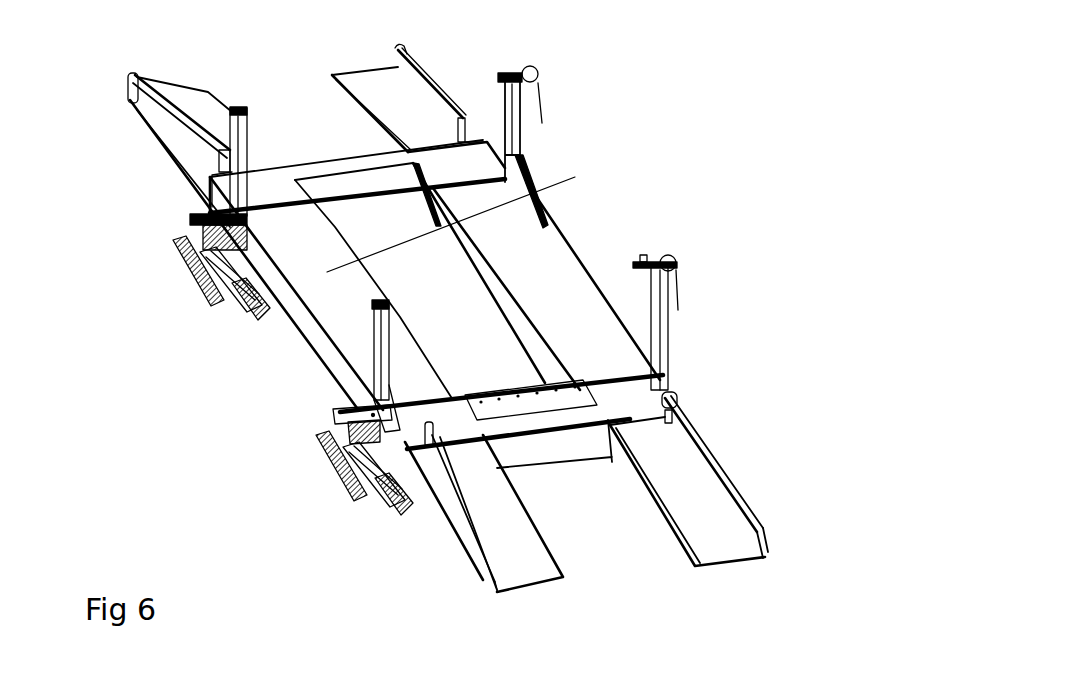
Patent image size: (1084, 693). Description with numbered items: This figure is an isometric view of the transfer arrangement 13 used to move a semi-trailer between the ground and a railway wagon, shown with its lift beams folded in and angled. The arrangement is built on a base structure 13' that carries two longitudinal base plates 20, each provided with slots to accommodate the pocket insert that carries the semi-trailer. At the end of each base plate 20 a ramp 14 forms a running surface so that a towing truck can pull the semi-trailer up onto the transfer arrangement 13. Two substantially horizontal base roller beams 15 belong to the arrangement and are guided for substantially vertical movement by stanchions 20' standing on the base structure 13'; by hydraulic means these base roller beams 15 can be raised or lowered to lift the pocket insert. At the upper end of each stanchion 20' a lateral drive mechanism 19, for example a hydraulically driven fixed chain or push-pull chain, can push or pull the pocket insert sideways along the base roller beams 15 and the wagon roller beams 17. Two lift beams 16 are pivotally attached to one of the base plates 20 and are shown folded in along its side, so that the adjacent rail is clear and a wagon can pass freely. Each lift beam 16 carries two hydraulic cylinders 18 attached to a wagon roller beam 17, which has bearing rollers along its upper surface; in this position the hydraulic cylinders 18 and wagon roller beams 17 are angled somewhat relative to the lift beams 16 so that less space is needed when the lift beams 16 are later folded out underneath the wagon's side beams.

The transfer arrangement 13 is at (491, 270).
The base structure 13' is at (493, 225).
The ramp 14 is at (150, 133).
The base roller beam 15 is at (328, 270).
The lift beam 16 is at (237, 288).
The wagon roller beam 17 is at (175, 243).
The hydraulic cylinder 18 is at (193, 270).
The lateral drive mechanism 19 is at (538, 68).
The base plate 20 is at (541, 266).
The stanchion 20' is at (451, 229).